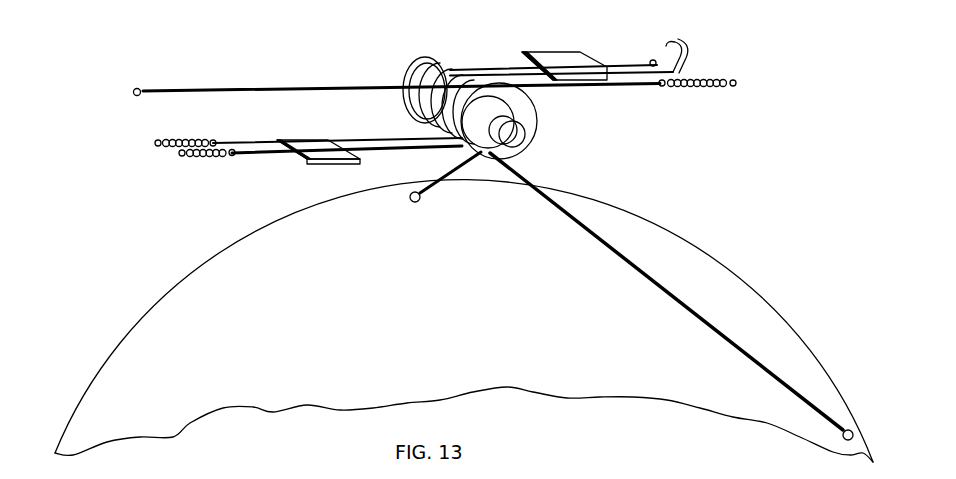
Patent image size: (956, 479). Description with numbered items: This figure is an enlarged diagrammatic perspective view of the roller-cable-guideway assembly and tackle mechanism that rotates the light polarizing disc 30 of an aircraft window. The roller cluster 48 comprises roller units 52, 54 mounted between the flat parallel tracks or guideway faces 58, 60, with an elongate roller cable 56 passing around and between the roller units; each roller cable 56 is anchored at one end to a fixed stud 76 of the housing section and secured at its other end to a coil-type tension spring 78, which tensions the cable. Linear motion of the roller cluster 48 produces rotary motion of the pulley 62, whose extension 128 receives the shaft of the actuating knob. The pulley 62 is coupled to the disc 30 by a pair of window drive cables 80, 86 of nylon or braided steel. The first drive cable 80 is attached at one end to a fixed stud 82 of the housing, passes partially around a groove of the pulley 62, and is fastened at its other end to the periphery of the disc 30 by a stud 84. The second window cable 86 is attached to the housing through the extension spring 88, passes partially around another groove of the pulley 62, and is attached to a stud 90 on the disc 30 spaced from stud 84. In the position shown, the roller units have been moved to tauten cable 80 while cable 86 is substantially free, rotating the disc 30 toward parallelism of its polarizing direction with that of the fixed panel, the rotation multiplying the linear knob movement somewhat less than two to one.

The light polarizing disc 30 is at (485, 311).
The roller cluster 48 is at (408, 121).
The roller unit 52 is at (402, 73).
The roller unit 54 is at (543, 127).
The roller cable 56 is at (250, 140).
The guideway face 58 is at (560, 57).
The guideway face 60 is at (324, 167).
The pulley 62 is at (521, 110).
The stud 76 is at (679, 49).
The tension spring 78 is at (200, 162).
The window drive cable 80 is at (300, 88).
The fixed stud 82 is at (138, 87).
The stud 84 is at (416, 203).
The window cable 86 is at (647, 282).
The extension spring 88 is at (705, 92).
The stud 90 is at (854, 431).
The extension of the pulley 128 is at (517, 140).